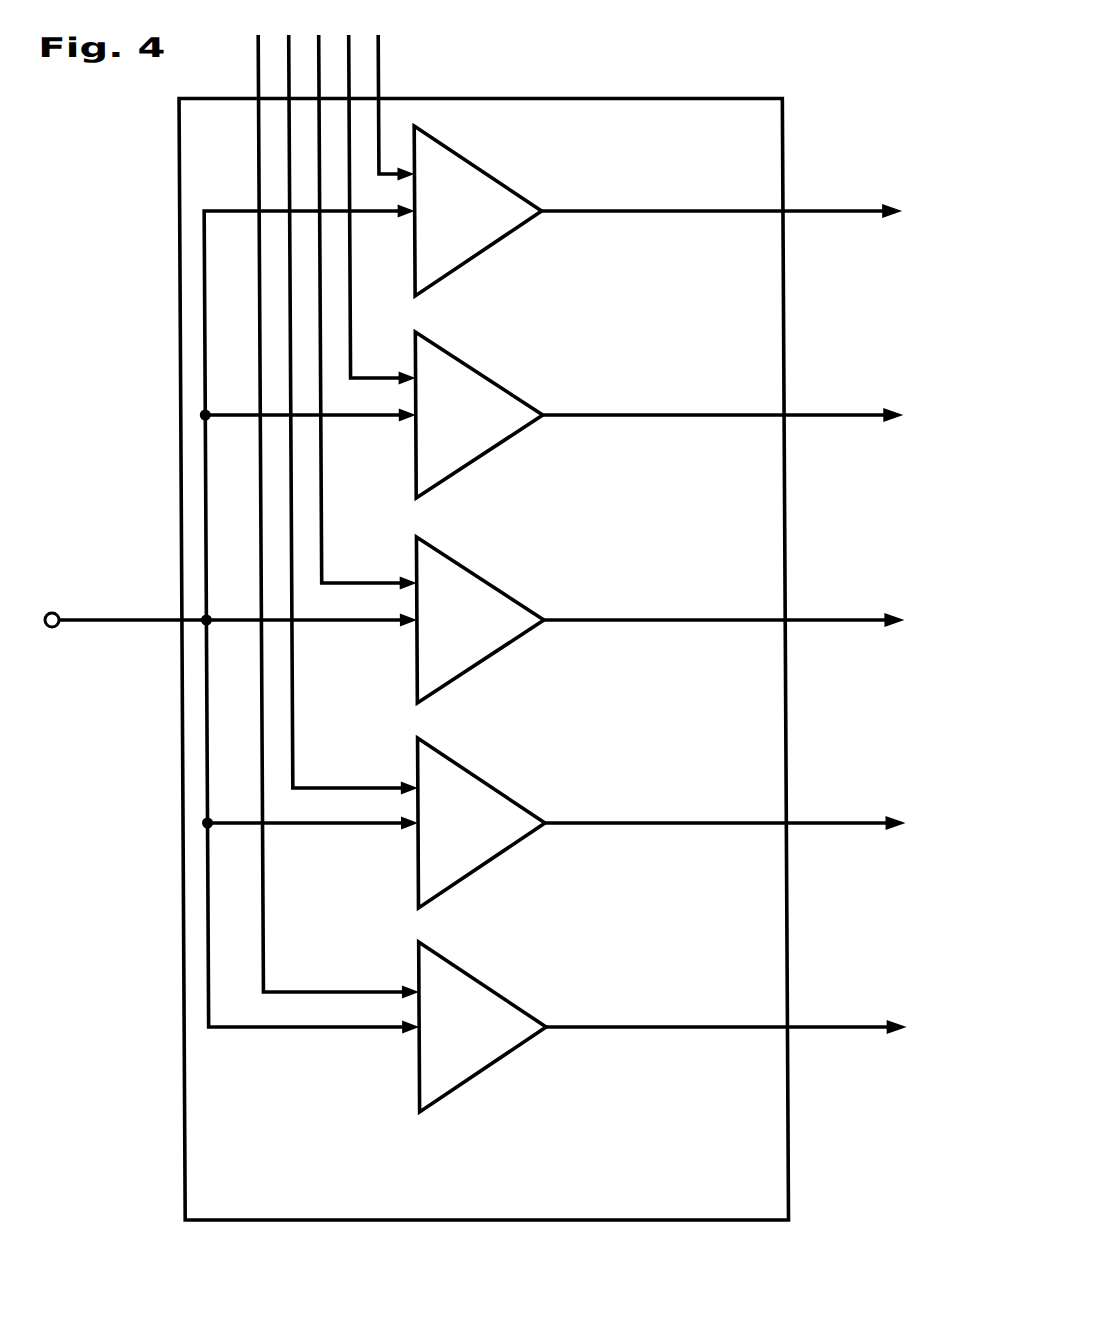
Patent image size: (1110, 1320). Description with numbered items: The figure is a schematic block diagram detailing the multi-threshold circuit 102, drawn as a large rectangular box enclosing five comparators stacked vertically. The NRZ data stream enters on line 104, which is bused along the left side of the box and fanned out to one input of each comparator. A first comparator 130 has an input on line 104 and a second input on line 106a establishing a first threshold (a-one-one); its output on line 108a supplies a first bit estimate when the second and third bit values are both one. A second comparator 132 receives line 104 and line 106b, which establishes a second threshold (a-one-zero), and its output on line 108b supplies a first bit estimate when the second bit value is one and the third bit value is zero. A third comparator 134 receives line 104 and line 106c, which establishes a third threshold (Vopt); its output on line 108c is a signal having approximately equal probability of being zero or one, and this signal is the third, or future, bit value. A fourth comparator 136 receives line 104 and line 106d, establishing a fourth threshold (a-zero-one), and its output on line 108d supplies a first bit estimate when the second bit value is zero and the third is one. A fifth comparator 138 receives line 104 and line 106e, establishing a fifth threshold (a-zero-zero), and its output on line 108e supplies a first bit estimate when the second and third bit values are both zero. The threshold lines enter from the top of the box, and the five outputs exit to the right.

The multi-threshold circuit 102 is at (716, 1208).
The line 104 is at (108, 620).
The line 106a is at (380, 50).
The line 106b is at (373, 378).
The line 106c is at (352, 582).
The line 106d is at (345, 788).
The line 106e is at (338, 992).
The line 108a is at (641, 209).
The line 108b is at (641, 413).
The line 108c is at (643, 618).
The line 108d is at (643, 821).
The line 108e is at (643, 1025).
The first comparator 130 is at (481, 241).
The second comparator 132 is at (480, 446).
The third comparator 134 is at (480, 650).
The fourth comparator 136 is at (483, 820).
The fifth comparator 138 is at (482, 1026).